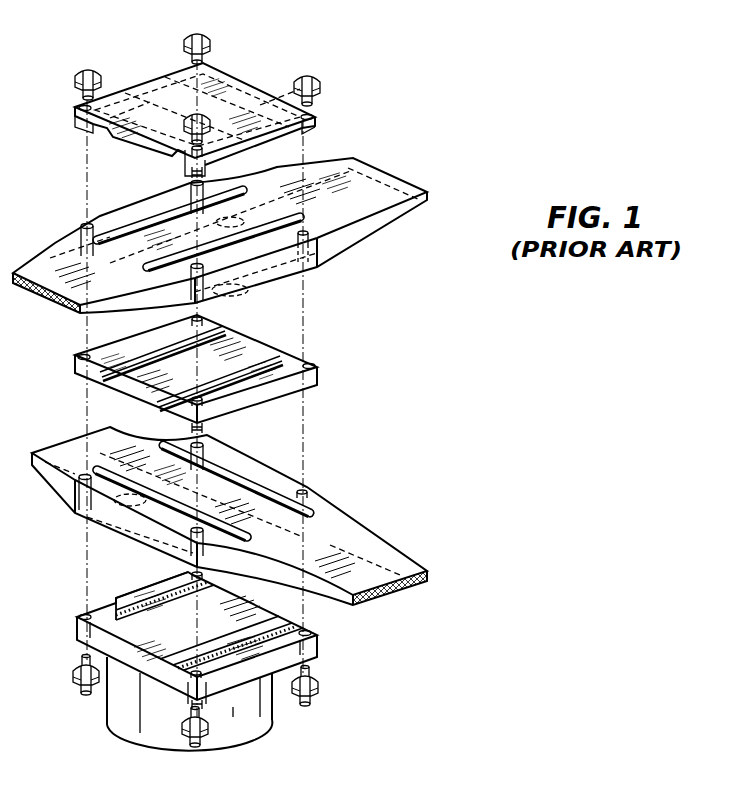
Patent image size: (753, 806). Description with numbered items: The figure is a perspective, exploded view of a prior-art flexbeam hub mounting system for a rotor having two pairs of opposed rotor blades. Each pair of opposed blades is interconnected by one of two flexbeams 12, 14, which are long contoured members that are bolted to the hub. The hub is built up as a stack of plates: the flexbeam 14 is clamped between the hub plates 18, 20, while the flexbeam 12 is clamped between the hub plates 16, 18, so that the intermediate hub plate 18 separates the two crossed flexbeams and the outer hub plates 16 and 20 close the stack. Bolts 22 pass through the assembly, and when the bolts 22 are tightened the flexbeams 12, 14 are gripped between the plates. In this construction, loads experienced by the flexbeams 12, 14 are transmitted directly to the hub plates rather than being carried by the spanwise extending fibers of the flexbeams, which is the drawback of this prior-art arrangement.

The flexbeam 12 is at (366, 232).
The flexbeam 14 is at (380, 549).
The hub plate 16 is at (240, 84).
The hub plate 18 is at (256, 400).
The hub plate 20 is at (281, 626).
The bolts 22 is at (88, 66).